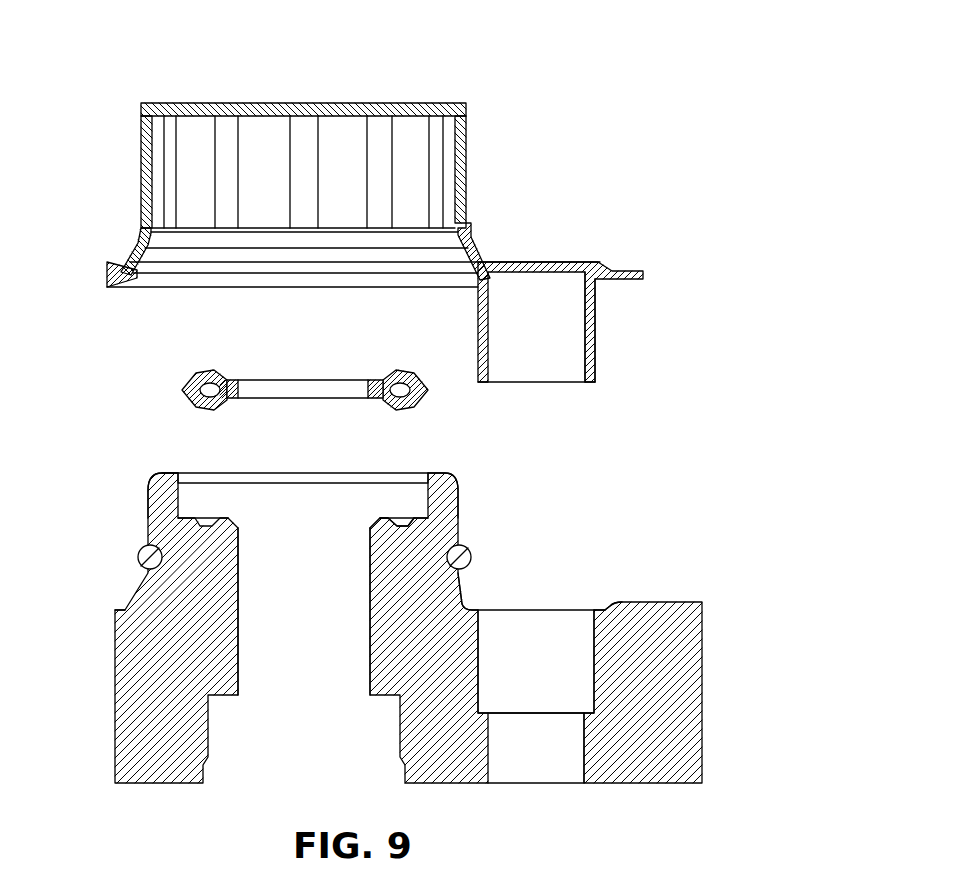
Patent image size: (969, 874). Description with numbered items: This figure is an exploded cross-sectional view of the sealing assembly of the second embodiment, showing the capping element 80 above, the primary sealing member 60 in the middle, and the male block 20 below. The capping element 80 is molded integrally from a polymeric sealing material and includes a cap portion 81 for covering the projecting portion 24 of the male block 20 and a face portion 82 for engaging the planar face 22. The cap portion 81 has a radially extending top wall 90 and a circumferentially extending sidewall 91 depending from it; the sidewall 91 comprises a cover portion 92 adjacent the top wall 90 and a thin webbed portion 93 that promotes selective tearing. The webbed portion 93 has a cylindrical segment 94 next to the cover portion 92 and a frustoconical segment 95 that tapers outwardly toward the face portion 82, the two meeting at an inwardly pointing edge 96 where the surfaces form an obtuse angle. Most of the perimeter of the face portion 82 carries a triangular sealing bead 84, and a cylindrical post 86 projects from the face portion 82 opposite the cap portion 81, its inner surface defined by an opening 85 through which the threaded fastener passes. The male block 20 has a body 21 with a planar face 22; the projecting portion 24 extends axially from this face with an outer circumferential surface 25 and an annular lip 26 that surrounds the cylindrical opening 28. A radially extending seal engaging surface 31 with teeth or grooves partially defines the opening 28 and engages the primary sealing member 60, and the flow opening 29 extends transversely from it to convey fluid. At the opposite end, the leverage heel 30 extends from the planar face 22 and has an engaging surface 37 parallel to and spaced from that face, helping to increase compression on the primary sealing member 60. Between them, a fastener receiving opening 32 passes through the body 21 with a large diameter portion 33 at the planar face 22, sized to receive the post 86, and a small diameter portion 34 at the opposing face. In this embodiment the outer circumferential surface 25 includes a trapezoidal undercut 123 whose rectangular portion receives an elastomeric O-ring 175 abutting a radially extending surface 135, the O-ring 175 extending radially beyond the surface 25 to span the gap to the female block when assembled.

The capping element 80 is at (203, 70).
The cap portion 81 is at (139, 101).
The face portion 82 is at (623, 266).
The sealing bead 84 is at (110, 275).
The opening 85 is at (585, 316).
The cylindrical post 86 is at (596, 340).
The top wall 90 is at (298, 103).
The sidewall 91 is at (141, 130).
The cover portion 92 is at (468, 125).
The webbed portion 93 is at (138, 230).
The cylindrical segment 94 is at (470, 238).
The frustoconical segment 95 is at (486, 264).
The inwardly pointing edge 96 is at (130, 246).
The primary sealing member 60 is at (184, 377).
The male seal fitting block 20 is at (675, 685).
The body 21 is at (402, 606).
The planar face 22 is at (125, 607).
The projecting portion 24 is at (146, 505).
The outer circumferential surface 25 is at (460, 514).
The annular lip 26 is at (165, 473).
The cylindrical opening 28 is at (206, 507).
The flow opening 29 is at (370, 585).
The leverage heel 30 is at (692, 602).
The seal engaging surface 31 is at (378, 516).
The fastener receiving opening 32 is at (594, 655).
The large diameter portion 33 is at (536, 661).
The small diameter portion 34 is at (584, 742).
The engaging surface 37 is at (660, 601).
The undercut 123 is at (461, 583).
The radially extending surface 135 is at (471, 553).
The O-ring 175 is at (139, 556).